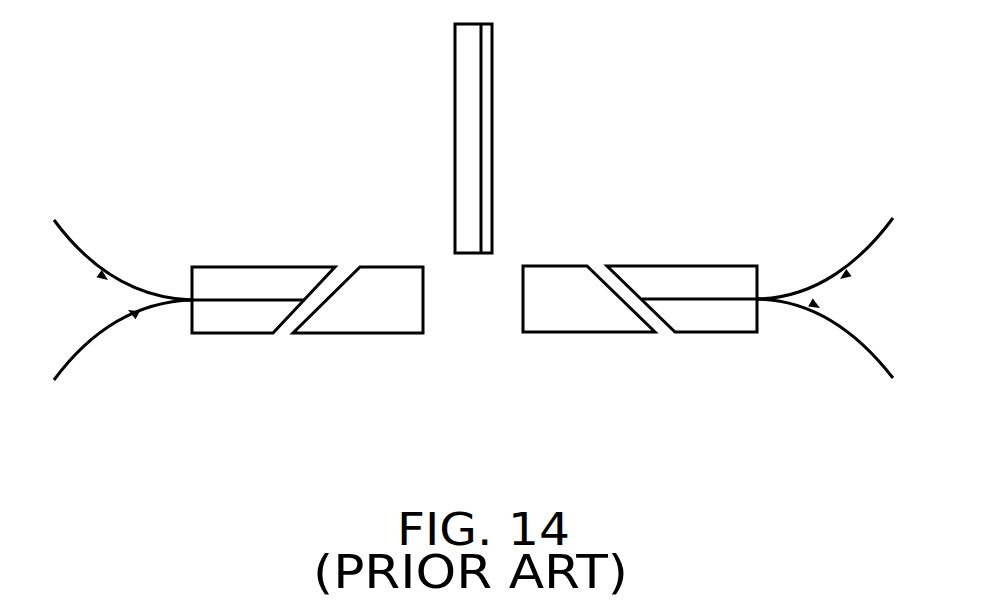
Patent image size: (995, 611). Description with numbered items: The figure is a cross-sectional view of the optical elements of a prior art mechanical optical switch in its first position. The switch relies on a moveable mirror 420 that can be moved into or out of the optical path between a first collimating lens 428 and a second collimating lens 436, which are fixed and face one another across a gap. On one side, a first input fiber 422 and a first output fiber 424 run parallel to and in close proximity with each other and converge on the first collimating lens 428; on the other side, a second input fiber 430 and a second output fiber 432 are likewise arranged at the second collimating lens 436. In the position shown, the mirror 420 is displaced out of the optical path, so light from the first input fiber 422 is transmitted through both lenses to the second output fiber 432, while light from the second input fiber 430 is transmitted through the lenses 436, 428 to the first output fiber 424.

The mirror 420 is at (455, 125).
The first input fiber 422 is at (79, 253).
The first output fiber 424 is at (79, 346).
The first collimating lens 428 is at (378, 334).
The second input fiber 430 is at (872, 250).
The second output fiber 432 is at (855, 331).
The second collimating lens 436 is at (597, 333).